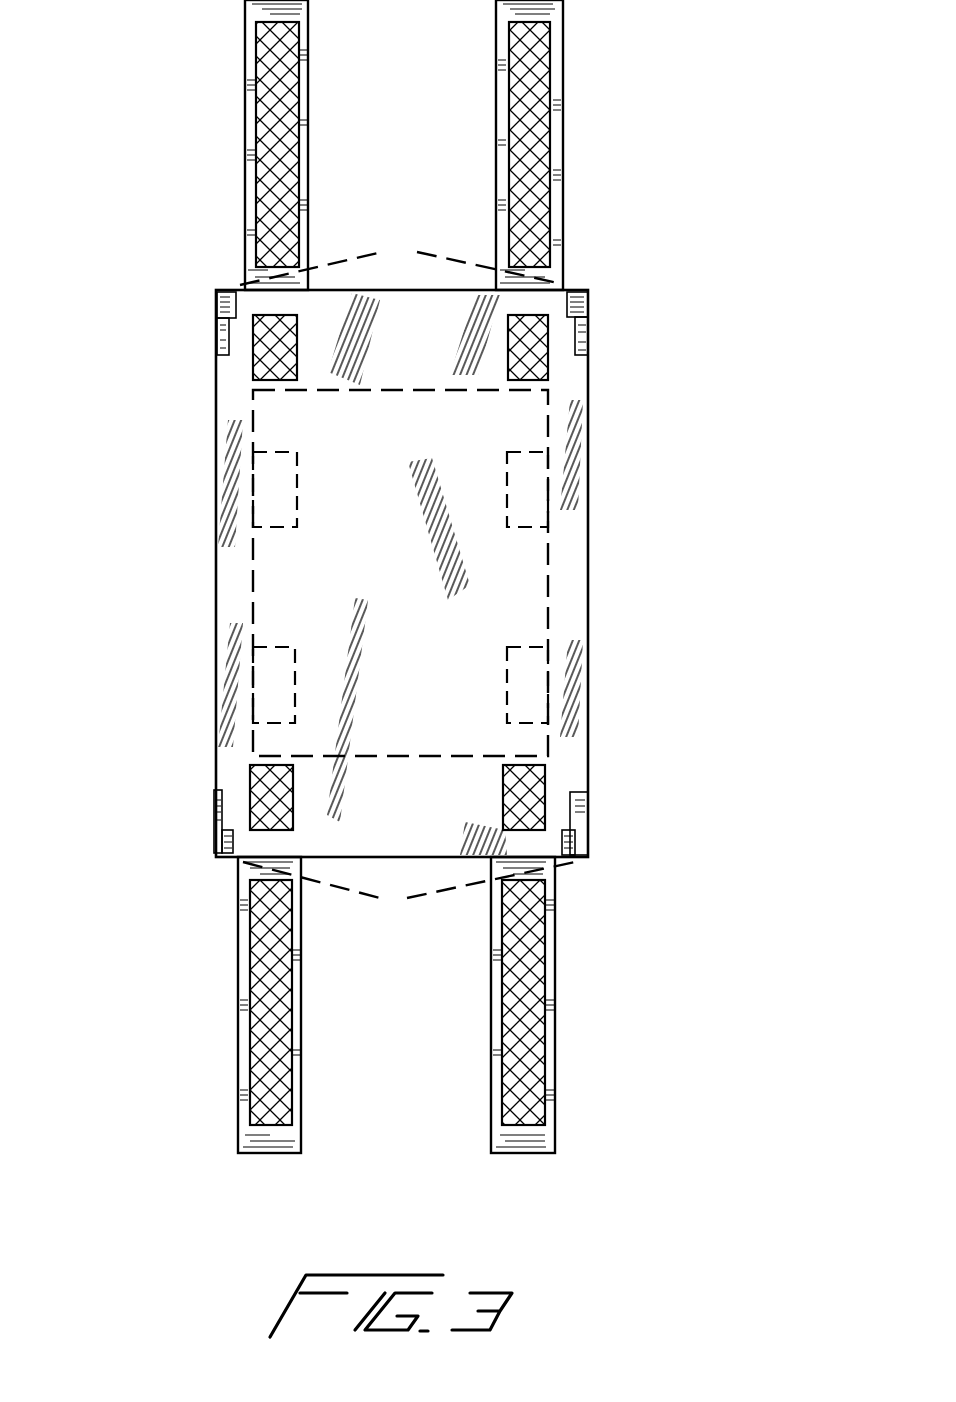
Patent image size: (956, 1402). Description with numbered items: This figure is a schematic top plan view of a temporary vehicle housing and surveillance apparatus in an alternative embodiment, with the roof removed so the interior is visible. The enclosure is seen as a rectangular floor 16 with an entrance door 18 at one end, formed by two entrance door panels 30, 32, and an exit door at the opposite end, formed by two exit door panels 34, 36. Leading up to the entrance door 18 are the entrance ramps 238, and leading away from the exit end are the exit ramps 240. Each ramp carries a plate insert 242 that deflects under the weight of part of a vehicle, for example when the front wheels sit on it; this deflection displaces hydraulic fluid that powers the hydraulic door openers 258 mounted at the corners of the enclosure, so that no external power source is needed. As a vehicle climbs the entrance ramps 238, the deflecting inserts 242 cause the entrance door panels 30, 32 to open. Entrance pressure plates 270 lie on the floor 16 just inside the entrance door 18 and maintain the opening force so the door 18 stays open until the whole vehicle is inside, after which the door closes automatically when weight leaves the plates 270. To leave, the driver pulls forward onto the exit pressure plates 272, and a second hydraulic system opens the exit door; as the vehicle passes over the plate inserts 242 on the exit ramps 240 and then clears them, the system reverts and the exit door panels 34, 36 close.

The floor 16 is at (222, 674).
The entrance door 18 is at (382, 857).
The entrance door panel 30 is at (335, 890).
The entrance door panel 32 is at (443, 893).
The exit door panel 34 is at (337, 262).
The exit door panel 36 is at (455, 258).
The entrance ramp 238 is at (236, 1140).
The exit ramp 240 is at (252, 103).
The plate insert 242 is at (262, 198).
The hydraulic door opener 258 is at (217, 342).
The entrance pressure plate 270 is at (252, 785).
The exit pressure plate 272 is at (255, 378).